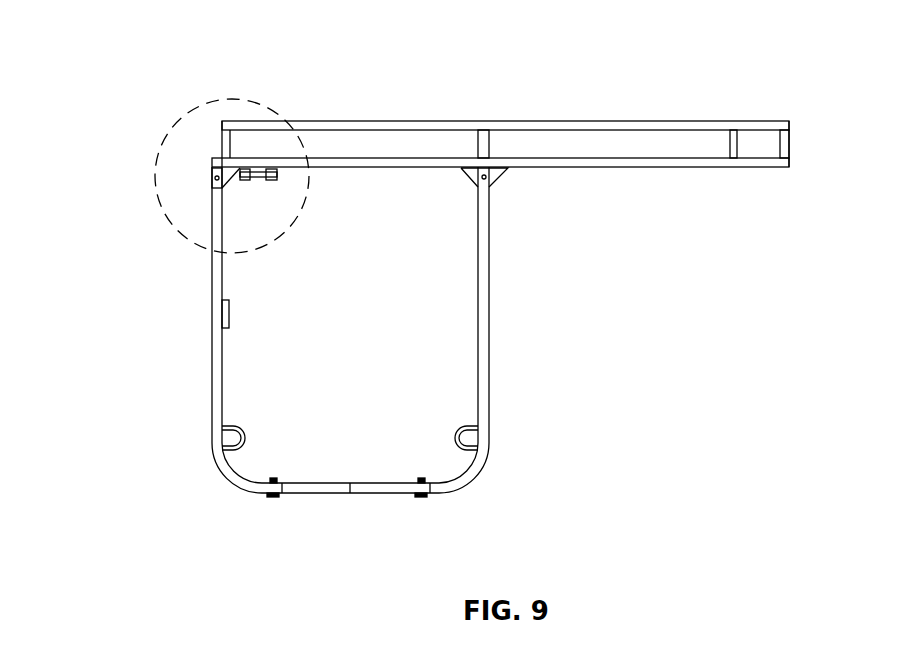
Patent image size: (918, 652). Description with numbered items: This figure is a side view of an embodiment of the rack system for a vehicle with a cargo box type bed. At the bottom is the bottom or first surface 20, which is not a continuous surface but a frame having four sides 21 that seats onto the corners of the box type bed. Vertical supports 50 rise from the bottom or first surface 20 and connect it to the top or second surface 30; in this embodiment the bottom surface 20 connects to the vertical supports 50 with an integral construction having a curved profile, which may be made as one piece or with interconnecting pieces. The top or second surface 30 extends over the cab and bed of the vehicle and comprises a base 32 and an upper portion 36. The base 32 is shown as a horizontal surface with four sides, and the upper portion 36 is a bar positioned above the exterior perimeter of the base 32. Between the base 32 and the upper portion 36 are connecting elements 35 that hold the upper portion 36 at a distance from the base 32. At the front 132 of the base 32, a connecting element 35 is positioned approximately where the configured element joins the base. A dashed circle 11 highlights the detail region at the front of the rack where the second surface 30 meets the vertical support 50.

The detail region 11 is at (178, 228).
The bottom or first surface 20 is at (351, 341).
The sides 21 is at (380, 493).
The top or second surface 30 is at (530, 145).
The base 32 is at (403, 168).
The connecting elements 35 is at (490, 143).
The upper portion 36 is at (532, 120).
The vertical supports 50 is at (212, 343).
The front of the base 132 is at (134, 171).